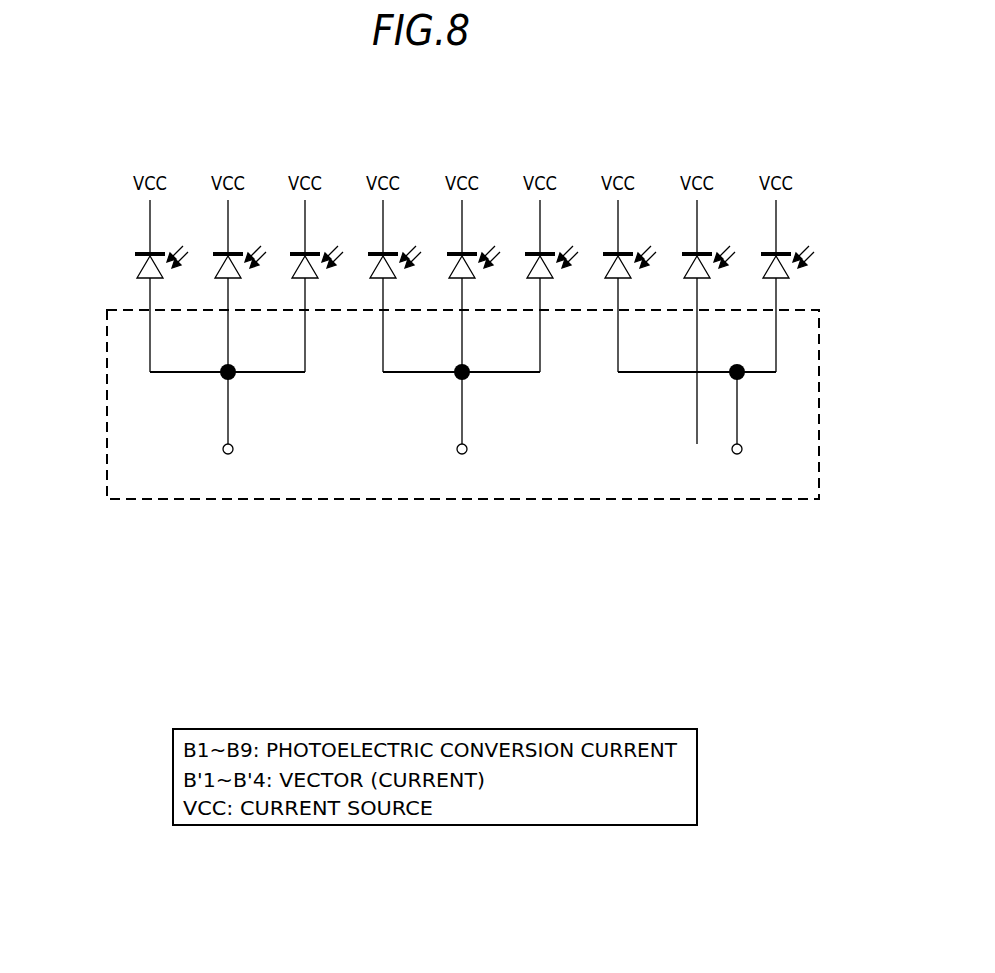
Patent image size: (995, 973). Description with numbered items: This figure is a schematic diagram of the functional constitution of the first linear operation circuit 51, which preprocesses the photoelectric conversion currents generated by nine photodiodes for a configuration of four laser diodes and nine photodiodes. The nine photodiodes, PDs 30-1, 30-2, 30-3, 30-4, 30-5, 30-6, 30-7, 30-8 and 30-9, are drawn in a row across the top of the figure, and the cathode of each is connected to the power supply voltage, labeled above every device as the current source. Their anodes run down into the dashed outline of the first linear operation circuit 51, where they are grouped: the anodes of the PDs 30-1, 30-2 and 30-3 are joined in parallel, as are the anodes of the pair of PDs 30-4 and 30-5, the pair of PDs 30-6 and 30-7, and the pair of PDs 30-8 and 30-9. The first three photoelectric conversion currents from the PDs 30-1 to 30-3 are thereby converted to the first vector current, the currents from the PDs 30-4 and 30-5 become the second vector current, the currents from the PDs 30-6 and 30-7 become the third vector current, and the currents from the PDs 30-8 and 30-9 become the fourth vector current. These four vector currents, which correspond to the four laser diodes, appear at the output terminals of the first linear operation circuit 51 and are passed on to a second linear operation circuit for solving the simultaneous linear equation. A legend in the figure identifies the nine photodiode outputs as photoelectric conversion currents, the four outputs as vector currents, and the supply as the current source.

The PD 30-1 is at (138, 268).
The PD 30-2 is at (233, 279).
The PD 30-3 is at (310, 279).
The PD 30-4 is at (388, 279).
The PD 30-5 is at (467, 279).
The PD 30-6 is at (545, 279).
The PD 30-7 is at (623, 279).
The PD 30-8 is at (702, 279).
The PD 30-9 is at (781, 279).
The first linear operation circuit 51 is at (640, 500).